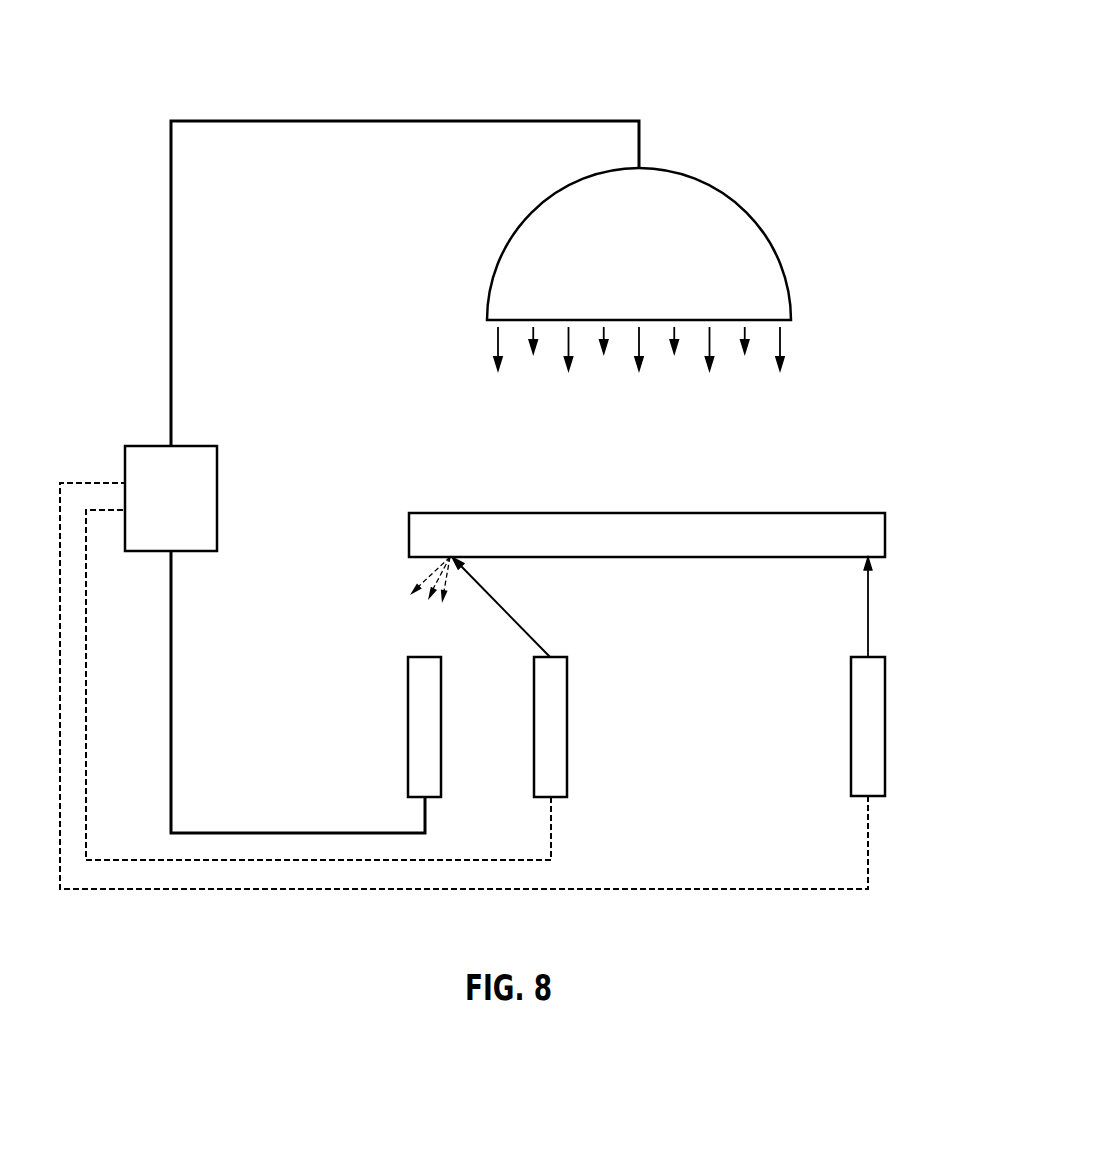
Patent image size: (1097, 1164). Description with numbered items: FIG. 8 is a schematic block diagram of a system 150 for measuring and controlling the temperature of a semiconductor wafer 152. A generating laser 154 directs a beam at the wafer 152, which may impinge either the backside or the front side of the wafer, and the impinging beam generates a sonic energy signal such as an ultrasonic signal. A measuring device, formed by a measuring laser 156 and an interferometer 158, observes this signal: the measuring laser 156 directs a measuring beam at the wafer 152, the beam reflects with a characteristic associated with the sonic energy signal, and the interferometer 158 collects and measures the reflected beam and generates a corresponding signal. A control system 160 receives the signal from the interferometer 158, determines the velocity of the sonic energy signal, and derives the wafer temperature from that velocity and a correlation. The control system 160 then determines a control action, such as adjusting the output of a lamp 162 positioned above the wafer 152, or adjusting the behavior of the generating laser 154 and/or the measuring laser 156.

The system 150 is at (833, 75).
The semiconductor wafer 152 is at (685, 523).
The generating laser 154 is at (906, 676).
The measuring laser 156 is at (525, 677).
The interferometer 158 is at (460, 727).
The control system 160 is at (208, 497).
The lamp 162 is at (673, 269).